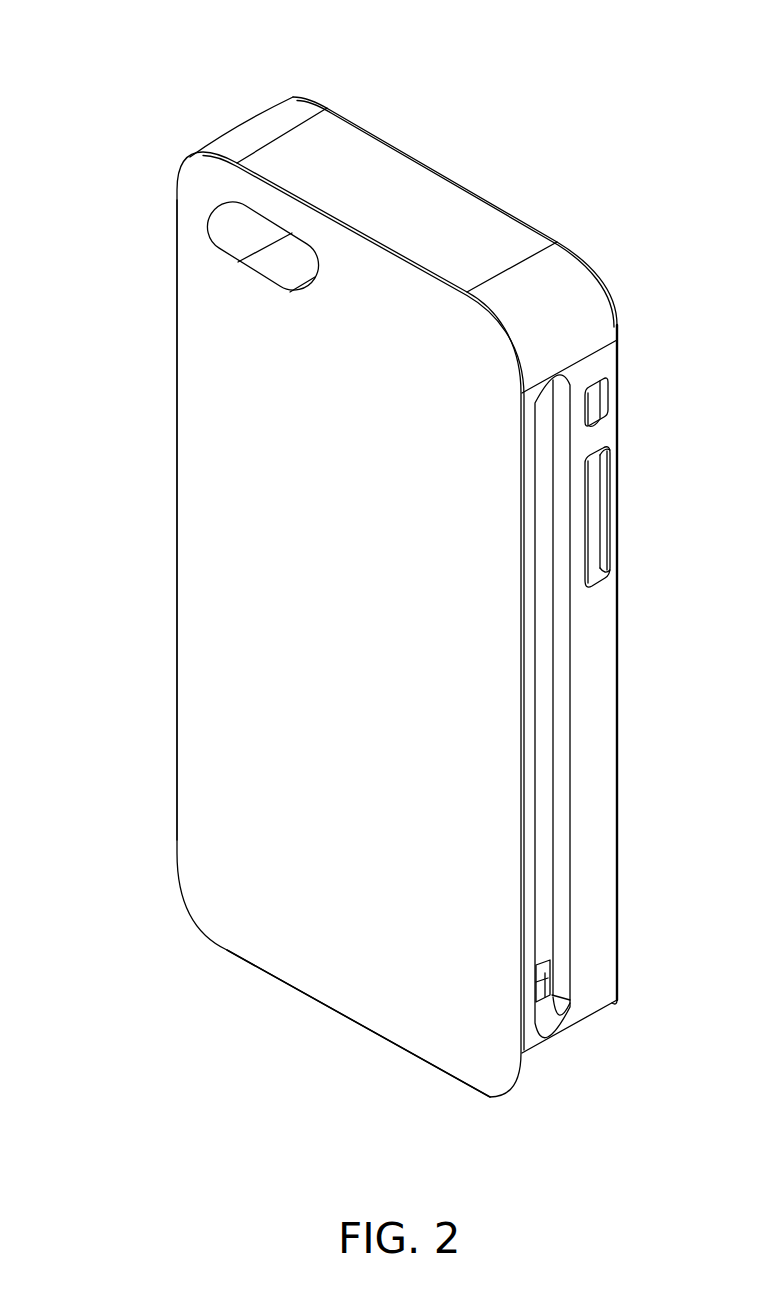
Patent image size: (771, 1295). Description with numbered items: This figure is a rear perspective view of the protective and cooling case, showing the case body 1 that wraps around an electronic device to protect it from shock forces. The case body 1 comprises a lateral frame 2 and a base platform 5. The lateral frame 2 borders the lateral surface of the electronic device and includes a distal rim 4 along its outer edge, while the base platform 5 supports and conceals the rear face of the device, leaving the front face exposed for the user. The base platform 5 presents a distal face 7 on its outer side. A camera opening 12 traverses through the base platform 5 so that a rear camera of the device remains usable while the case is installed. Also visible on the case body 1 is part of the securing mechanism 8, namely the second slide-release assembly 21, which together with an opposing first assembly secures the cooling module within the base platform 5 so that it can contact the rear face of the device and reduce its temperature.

The case body 1 is at (366, 548).
The lateral frame 2 is at (639, 503).
The distal rim 4 is at (617, 325).
The base platform 5 is at (137, 463).
The distal face 7 is at (364, 605).
The securing mechanism 8 is at (608, 958).
The camera opening 12 is at (250, 246).
The second slide-release assembly 21 is at (551, 974).